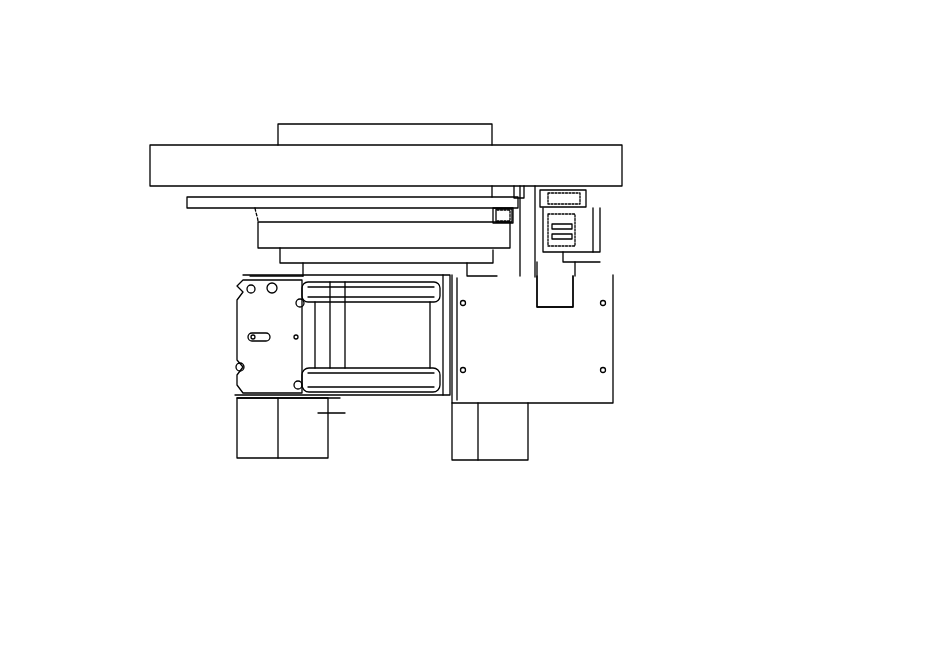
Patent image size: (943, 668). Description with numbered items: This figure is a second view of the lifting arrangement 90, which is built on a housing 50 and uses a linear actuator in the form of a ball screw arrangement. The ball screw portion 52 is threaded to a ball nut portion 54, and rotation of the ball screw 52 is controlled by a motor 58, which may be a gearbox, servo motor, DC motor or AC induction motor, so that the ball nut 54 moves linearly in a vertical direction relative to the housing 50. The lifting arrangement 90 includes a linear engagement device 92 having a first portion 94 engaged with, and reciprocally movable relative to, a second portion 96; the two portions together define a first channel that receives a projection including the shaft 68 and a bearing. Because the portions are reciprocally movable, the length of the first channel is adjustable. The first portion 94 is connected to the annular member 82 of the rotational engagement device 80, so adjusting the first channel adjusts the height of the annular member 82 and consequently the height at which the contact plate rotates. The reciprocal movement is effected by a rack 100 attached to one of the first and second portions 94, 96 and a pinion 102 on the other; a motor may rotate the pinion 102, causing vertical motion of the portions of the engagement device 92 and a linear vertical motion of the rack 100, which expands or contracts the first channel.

The lifting arrangement 90 is at (680, 63).
The rotational engagement device 80 is at (185, 130).
The annular member 82 is at (165, 164).
The ball screw portion 52 is at (480, 126).
The ball nut portion 54 is at (193, 202).
The linear engagement device 92 is at (640, 224).
The first portion 94 is at (573, 187).
The rack 100 is at (553, 197).
The pinion 102 is at (585, 235).
The second portion 96 is at (568, 273).
The shaft 68 is at (510, 212).
The motor 58 is at (243, 315).
The housing 50 is at (465, 443).